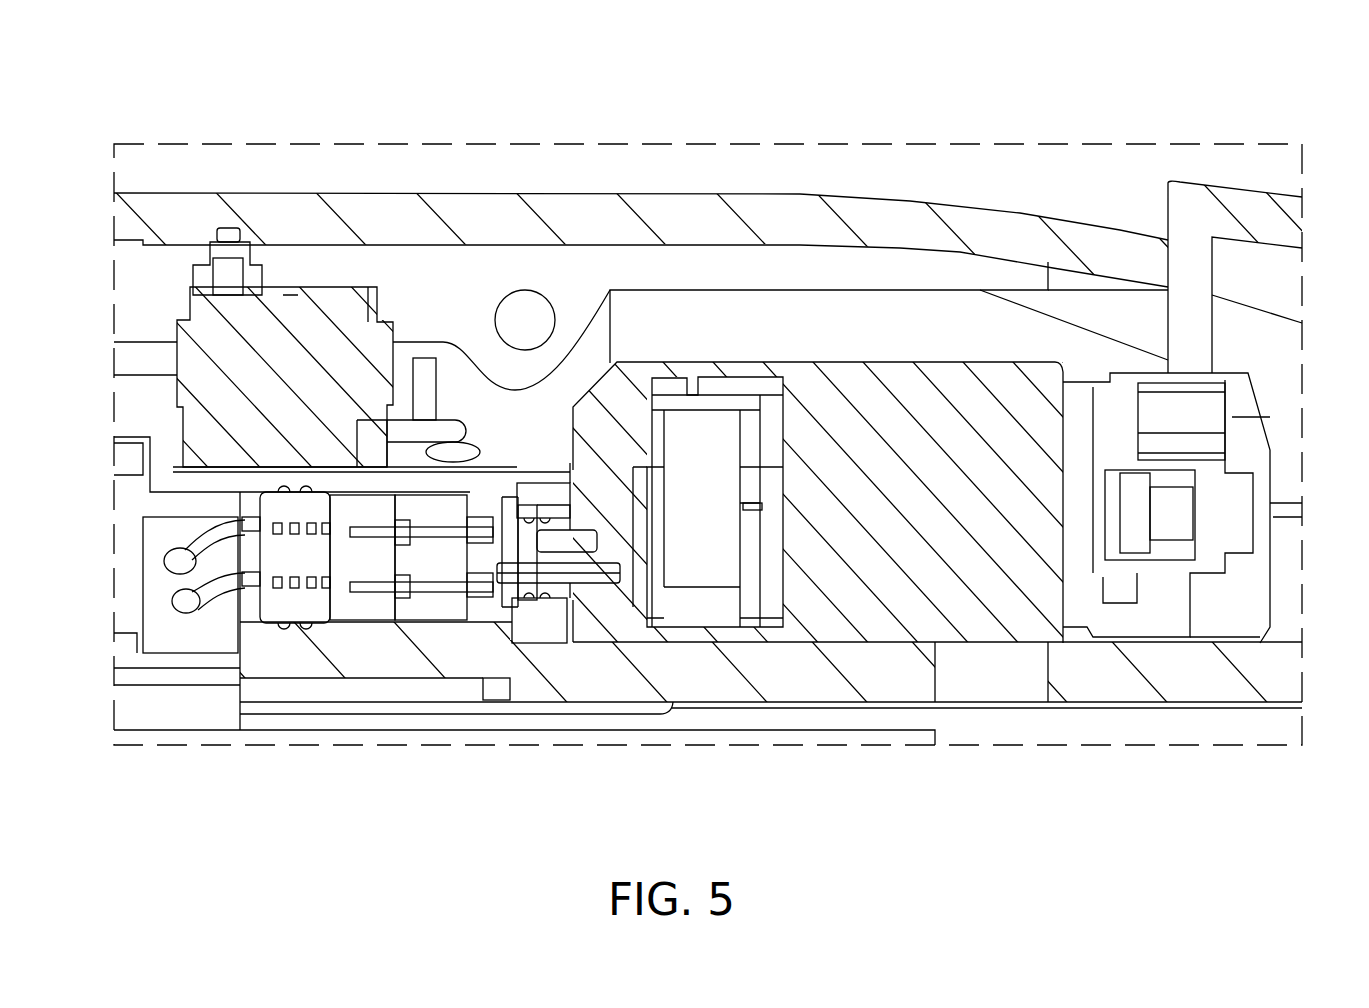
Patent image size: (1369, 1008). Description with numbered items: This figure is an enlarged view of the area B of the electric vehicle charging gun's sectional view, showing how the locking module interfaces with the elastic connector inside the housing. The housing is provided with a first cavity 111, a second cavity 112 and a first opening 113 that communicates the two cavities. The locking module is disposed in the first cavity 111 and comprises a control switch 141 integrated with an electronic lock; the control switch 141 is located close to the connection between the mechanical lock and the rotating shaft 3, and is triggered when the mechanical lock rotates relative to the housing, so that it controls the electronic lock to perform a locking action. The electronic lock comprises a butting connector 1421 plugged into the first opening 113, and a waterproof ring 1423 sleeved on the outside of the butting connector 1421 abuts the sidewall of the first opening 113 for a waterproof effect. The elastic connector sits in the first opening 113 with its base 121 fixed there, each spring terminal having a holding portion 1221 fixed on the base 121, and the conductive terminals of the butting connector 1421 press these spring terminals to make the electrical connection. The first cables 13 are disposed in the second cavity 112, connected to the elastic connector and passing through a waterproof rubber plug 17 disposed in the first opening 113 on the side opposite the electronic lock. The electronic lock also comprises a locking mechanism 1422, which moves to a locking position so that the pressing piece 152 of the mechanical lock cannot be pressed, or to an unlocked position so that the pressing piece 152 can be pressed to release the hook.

The rotating shaft 3 is at (527, 298).
The first cables 13 is at (172, 562).
The waterproof rubber plug 17 is at (298, 600).
The first cavity 111 is at (1215, 633).
The second cavity 112 is at (155, 678).
The first opening 113 is at (362, 635).
The base 121 is at (430, 600).
The control switch 141 is at (312, 323).
The pressing piece 152 is at (1249, 222).
The holding portion 1221 is at (480, 600).
The butting connector 1421 is at (518, 497).
The locking mechanism 1422 is at (1125, 413).
The waterproof ring 1423 is at (548, 600).
The area B is at (1147, 143).